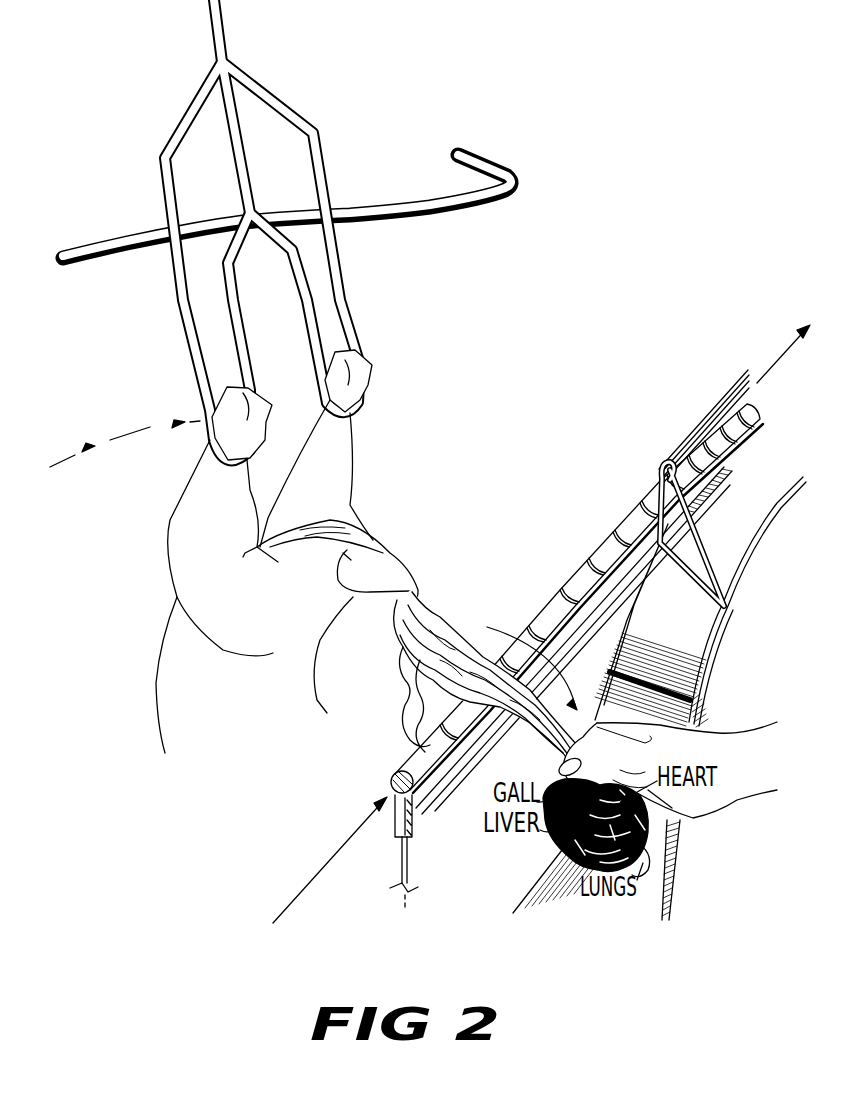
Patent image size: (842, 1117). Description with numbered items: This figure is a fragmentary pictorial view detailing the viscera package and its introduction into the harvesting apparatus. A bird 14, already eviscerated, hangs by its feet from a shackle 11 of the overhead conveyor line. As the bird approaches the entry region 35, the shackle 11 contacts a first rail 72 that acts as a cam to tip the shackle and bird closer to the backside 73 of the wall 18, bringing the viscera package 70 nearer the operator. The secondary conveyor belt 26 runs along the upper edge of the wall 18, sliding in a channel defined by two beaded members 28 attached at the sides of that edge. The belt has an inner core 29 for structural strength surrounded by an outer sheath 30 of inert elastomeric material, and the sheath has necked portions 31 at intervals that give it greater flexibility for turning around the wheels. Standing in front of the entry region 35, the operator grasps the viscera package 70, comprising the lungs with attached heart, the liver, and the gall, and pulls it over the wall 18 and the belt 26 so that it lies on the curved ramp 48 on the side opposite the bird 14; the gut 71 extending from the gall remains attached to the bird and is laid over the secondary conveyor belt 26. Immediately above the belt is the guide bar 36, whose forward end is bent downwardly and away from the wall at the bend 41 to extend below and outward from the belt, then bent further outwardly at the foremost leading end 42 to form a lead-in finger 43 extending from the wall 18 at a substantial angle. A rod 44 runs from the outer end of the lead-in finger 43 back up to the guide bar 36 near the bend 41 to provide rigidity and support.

The shackle 11 is at (263, 97).
The first rail 72 is at (383, 208).
The bird 14 is at (357, 460).
The entry region 35 is at (505, 585).
The secondary conveyor belt 26 is at (554, 608).
The gut 71 is at (457, 646).
The outer sheath 30 is at (410, 760).
The necked portions 31 is at (379, 779).
The inner core 29 is at (379, 792).
The beaded members 28 is at (412, 833).
The backside of the wall 73 is at (396, 897).
The wall 18 is at (480, 863).
The viscera package 70 is at (543, 770).
The guide bar 36 is at (740, 417).
The downward bend of the guide bar 41 is at (679, 534).
The rod 44 is at (697, 533).
The foremost leading end 42 is at (657, 543).
The lead-in finger 43 is at (693, 580).
The curved ramp 48 is at (650, 893).